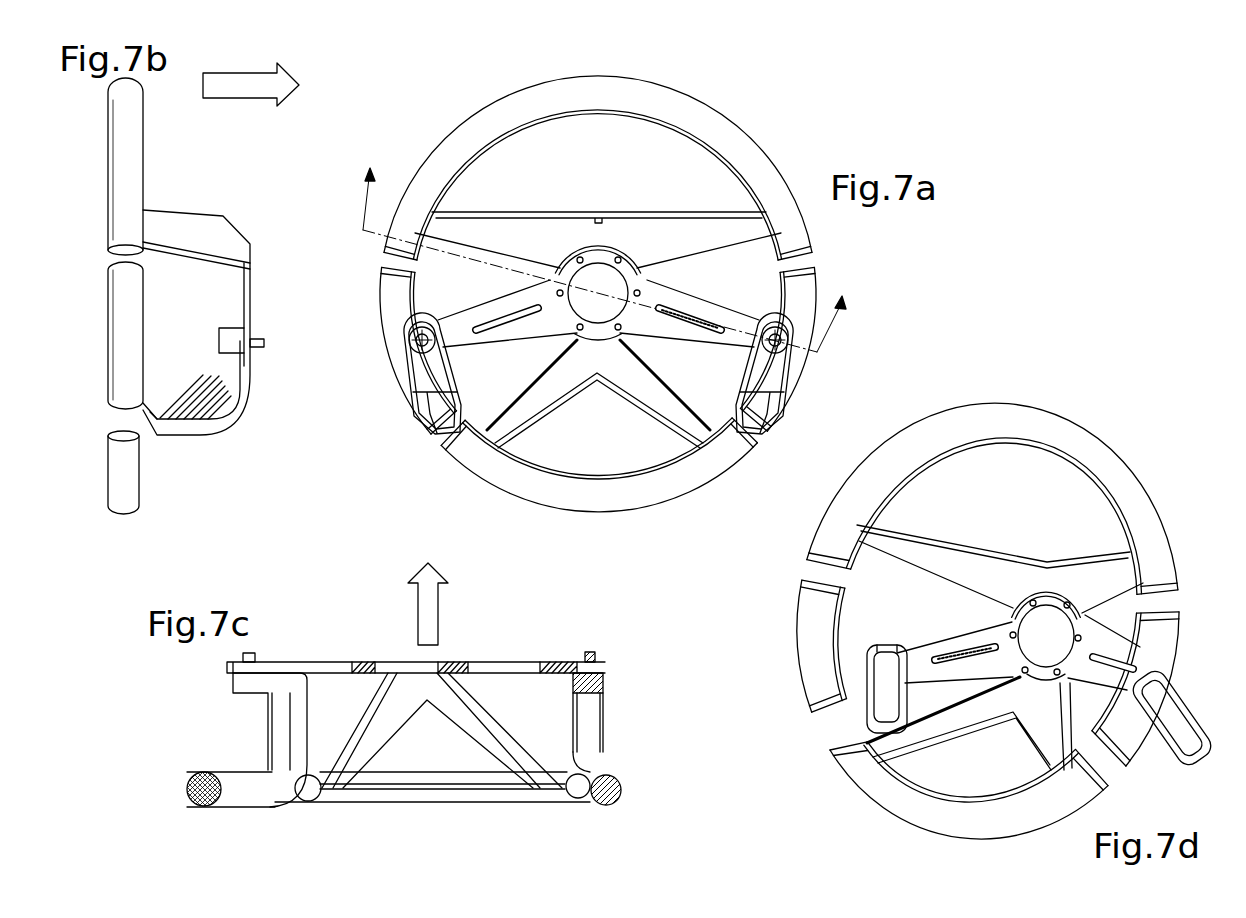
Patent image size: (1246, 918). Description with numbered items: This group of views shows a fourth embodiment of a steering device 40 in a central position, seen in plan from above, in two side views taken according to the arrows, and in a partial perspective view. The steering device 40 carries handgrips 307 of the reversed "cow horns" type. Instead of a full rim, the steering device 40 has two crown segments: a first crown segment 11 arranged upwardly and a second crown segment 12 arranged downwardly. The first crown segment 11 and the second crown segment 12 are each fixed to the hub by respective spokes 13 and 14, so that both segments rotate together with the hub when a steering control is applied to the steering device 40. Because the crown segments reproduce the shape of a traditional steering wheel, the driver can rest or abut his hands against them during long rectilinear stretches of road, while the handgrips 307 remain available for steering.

In FIG. 7B, the first crown segment 11 is at (153, 168).
In FIG. 7A, the first crown segment 11 is at (440, 168).
In FIG. 7D, the first crown segment 11 is at (1088, 457).
In FIG. 7B, the second crown segment 12 is at (133, 491).
In FIG. 7A, the second crown segment 12 is at (522, 492).
In FIG. 7D, the second crown segment 12 is at (908, 802).
In FIG. 7A, the spoke 13 is at (645, 242).
In FIG. 7D, the spoke 13 is at (940, 560).
In FIG. 7A, the spoke 14 is at (552, 382).
In FIG. 7D, the spoke 14 is at (962, 717).
In FIG. 7A, the handgrip 307 is at (803, 320).
In FIG. 7C, the handgrip 307 is at (595, 718).
In FIG. 7D, the handgrip 307 is at (806, 651).
In FIG. 7C, the steering device 40 is at (244, 427).